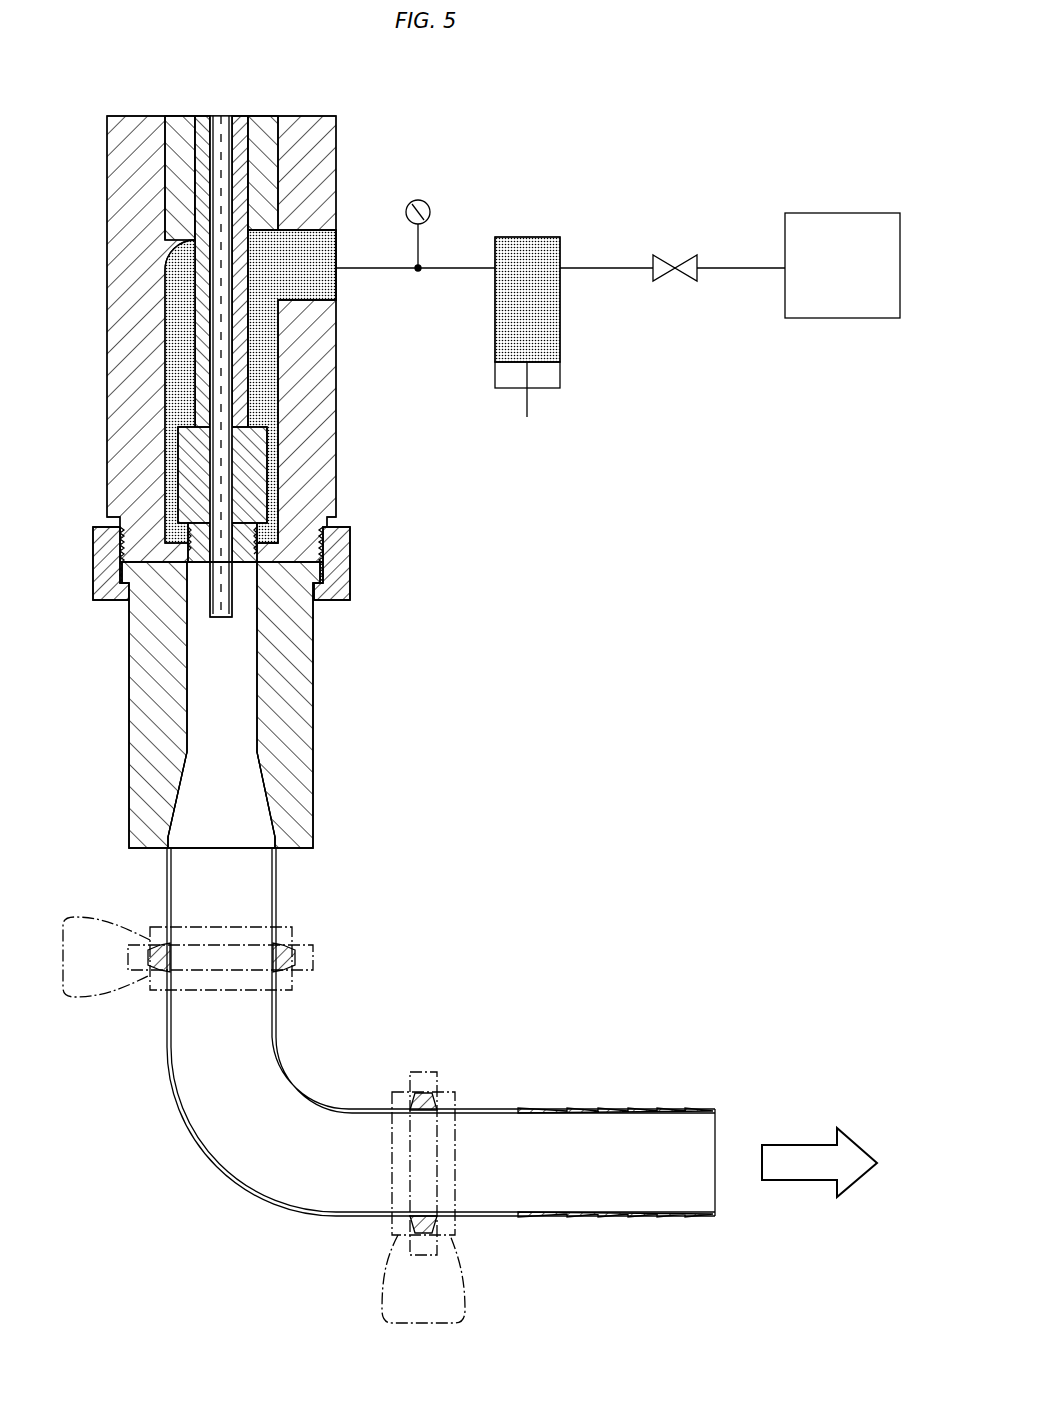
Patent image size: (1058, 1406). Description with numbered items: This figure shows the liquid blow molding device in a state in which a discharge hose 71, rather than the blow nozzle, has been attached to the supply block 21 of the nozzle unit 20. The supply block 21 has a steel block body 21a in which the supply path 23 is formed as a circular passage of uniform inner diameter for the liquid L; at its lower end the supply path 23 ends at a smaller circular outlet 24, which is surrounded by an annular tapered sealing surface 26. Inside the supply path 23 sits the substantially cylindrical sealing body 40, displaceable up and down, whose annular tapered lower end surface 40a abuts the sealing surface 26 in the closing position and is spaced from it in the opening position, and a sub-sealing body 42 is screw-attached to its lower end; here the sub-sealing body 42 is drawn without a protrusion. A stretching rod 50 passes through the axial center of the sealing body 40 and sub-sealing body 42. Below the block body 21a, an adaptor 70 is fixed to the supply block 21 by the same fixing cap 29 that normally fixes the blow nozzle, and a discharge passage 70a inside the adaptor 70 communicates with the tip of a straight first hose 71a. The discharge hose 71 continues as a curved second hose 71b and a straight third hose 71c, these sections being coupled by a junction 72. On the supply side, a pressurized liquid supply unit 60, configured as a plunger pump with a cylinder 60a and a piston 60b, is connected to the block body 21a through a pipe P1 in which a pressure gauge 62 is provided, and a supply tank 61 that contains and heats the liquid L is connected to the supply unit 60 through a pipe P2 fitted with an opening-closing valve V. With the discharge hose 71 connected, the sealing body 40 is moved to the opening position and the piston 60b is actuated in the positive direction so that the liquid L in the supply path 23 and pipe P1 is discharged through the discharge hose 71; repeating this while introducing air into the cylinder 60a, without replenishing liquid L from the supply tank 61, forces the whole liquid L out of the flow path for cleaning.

The nozzle unit 20 is at (302, 107).
The supply block 21 is at (245, 339).
The block body 21a is at (338, 352).
The supply path 23 is at (175, 322).
The liquid L is at (175, 358).
The outlet 24 is at (222, 610).
The sealing surface 26 is at (262, 554).
The fixing cap 29 is at (350, 560).
The sealing body 40 is at (270, 464).
The lower end surface 40a is at (183, 562).
The sub-sealing body 42 is at (199, 566).
The stretching rod 50 is at (258, 605).
The pressurized liquid supply unit 60 is at (580, 344).
The cylinder 60a is at (560, 306).
The piston 60b is at (540, 363).
The supply tank 61 is at (835, 228).
The pressure gauge 62 is at (406, 218).
The adaptor 70 is at (264, 705).
The discharge passage 70a is at (227, 735).
The discharge hose 71 is at (441, 1050).
The first hose 71a is at (277, 888).
The second hose 71b is at (237, 1178).
The third hose 71c is at (612, 1108).
The junction 72 is at (84, 983).
The pipe P1 is at (455, 268).
The pipe P2 is at (730, 268).
The opening-closing valve V is at (670, 256).